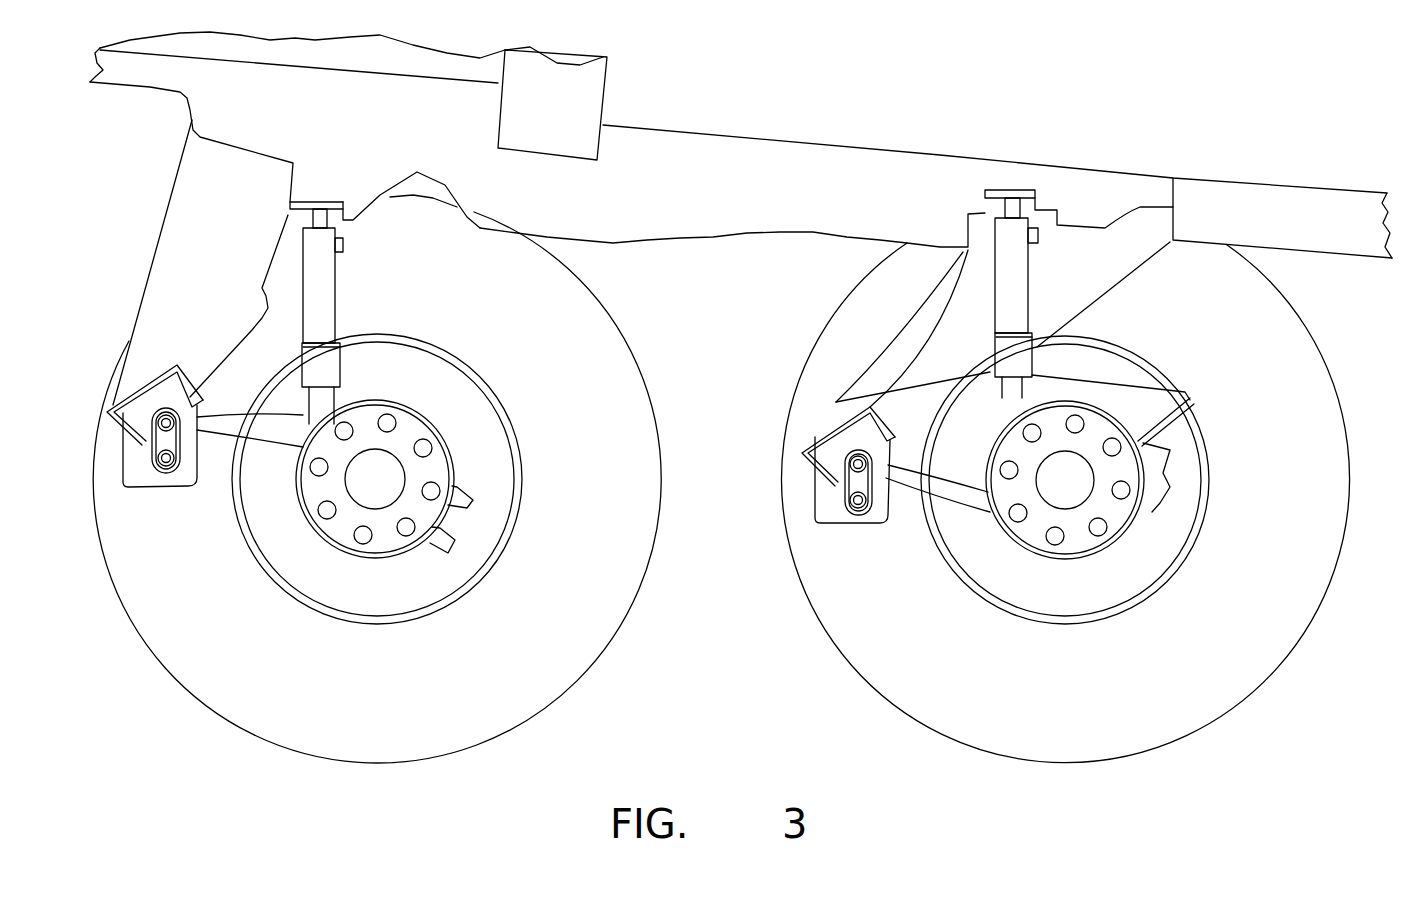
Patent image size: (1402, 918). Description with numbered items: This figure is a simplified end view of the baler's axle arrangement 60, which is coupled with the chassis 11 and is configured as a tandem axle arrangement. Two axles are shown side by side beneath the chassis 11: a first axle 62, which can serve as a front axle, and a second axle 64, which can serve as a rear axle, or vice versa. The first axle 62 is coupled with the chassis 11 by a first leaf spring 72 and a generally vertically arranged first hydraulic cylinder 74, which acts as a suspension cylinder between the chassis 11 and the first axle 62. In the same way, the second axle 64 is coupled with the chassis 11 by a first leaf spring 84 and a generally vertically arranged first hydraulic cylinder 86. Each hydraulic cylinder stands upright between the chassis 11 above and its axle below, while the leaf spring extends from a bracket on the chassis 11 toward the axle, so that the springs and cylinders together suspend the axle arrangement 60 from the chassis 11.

The chassis 11 is at (160, 212).
The axle arrangement 60 is at (790, 658).
The first axle 62 is at (376, 572).
The second axle 64 is at (1072, 575).
The first leaf spring 72 is at (213, 433).
The first hydraulic cylinder 74 is at (328, 289).
The first leaf spring 84 is at (912, 485).
The first hydraulic cylinder 86 is at (1020, 278).